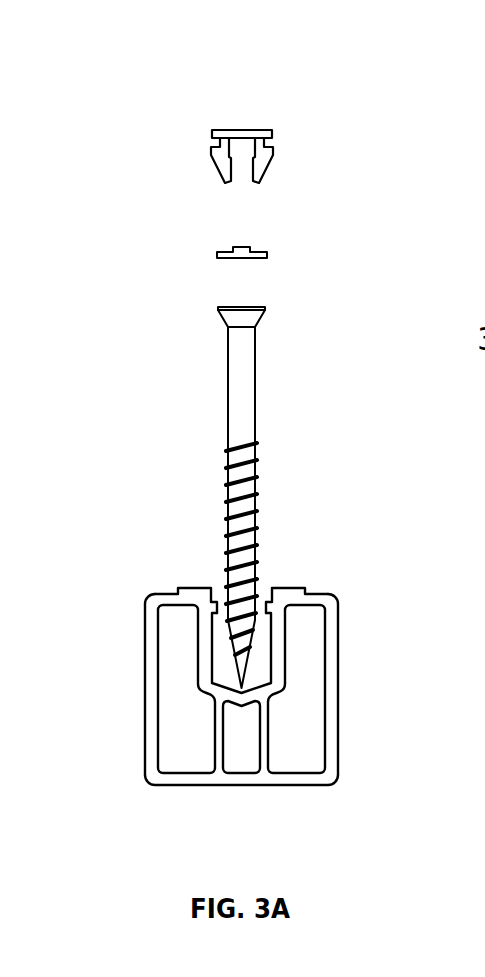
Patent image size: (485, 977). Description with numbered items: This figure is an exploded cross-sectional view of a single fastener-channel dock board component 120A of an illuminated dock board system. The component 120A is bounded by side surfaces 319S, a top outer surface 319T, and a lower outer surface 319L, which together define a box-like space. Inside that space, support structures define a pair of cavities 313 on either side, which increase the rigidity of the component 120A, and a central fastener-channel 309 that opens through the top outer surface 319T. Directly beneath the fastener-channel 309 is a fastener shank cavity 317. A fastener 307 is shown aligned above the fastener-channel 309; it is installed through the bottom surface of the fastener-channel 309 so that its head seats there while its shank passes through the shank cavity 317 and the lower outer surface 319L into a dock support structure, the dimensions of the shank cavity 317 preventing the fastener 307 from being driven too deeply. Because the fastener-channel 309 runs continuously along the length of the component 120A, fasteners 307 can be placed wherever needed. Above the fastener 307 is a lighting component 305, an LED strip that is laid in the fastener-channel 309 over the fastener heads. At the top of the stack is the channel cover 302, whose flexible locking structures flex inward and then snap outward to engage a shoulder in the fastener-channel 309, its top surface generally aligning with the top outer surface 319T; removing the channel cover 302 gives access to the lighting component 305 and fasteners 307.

The single fastener-channel dock board component 120A is at (158, 56).
The channel cover 302 is at (243, 130).
The lighting component 305 is at (253, 252).
The fastener 307 is at (242, 365).
The fastener-channel 309 is at (218, 667).
The cavities 313 is at (165, 723).
The fastener shank cavity 317 is at (245, 762).
The top outer surface 319T is at (308, 592).
The side surfaces 319S is at (144, 643).
The lower outer surface 319L is at (278, 787).